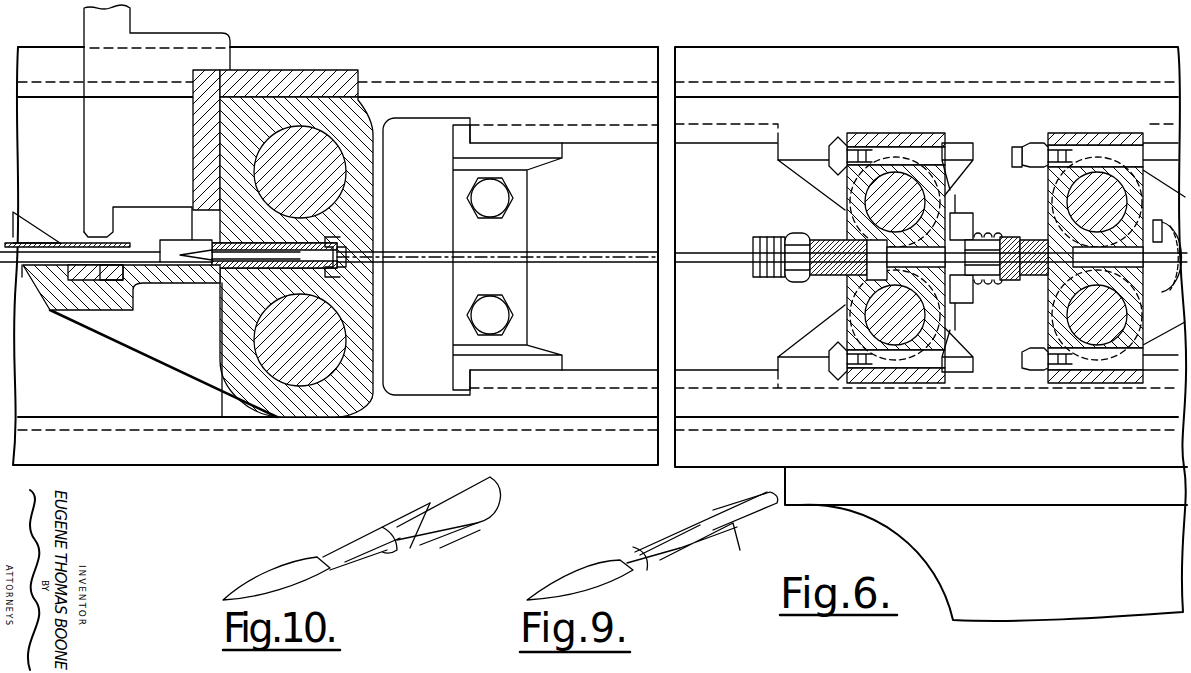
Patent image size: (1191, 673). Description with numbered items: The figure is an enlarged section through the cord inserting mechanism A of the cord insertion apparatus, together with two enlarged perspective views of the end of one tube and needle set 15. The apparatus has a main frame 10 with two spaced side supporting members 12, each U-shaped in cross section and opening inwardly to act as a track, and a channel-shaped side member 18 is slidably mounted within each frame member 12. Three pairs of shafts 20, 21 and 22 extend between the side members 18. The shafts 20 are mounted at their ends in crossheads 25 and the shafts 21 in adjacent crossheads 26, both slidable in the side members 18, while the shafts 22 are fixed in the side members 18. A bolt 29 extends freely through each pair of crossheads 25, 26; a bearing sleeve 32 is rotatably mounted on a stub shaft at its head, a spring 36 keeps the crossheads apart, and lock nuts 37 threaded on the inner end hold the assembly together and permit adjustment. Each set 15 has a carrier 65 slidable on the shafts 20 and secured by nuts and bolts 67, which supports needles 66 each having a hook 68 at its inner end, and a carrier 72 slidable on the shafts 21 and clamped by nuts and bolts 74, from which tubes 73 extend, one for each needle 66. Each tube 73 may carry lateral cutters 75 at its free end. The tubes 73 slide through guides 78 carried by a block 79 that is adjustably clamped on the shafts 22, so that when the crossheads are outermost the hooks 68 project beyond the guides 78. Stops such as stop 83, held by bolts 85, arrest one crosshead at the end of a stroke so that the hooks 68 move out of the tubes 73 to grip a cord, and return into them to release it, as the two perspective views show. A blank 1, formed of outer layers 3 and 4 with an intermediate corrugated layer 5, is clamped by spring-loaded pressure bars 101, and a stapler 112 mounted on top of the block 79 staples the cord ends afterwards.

In FIG. 6, the blank 1 is at (112, 258).
In FIG. 6, the outer layer 3 is at (60, 243).
In FIG. 6, the outer layer 4 is at (22, 277).
In FIG. 6, the intermediate corrugated layer 5 is at (60, 250).
In FIG. 6, the spring-loaded pressure bar 101 is at (30, 233).
In FIG. 6, the stapler 112 is at (173, 43).
In FIG. 6, the side supporting member 12 is at (548, 53).
In FIG. 6, the cord inserting mechanism A is at (612, 160).
In FIG. 6, the tube and needle set 15 is at (580, 248).
In FIG. 6, the shaft 22 is at (315, 137).
In FIG. 6, the block 79 is at (360, 108).
In FIG. 6, the guide 78 is at (337, 240).
In FIG. 6, the hook 68 is at (210, 250).
In FIG. 10, the hook 68 is at (317, 560).
In FIG. 9, the hook 68 is at (620, 560).
In FIG. 6, the lateral cutter 75 is at (240, 265).
In FIG. 10, the lateral cutter 75 is at (467, 525).
In FIG. 9, the lateral cutter 75 is at (705, 557).
In FIG. 6, the stop 83 is at (510, 224).
In FIG. 6, the bolt 85 is at (498, 198).
In FIG. 6, the main frame 10 is at (770, 52).
In FIG. 6, the channel-shaped side member 18 is at (697, 110).
In FIG. 6, the shaft 20 is at (1093, 187).
In FIG. 6, the shaft 21 is at (886, 180).
In FIG. 6, the crosshead 25 is at (1020, 170).
In FIG. 6, the crosshead 26 is at (957, 147).
In FIG. 6, the bolt 29 is at (753, 273).
In FIG. 6, the bearing sleeve 32 is at (1177, 295).
In FIG. 6, the spring 36 is at (980, 287).
In FIG. 6, the lock nut 37 is at (795, 282).
In FIG. 6, the carrier 65 is at (1125, 170).
In FIG. 6, the needle 66 is at (960, 213).
In FIG. 10, the needle 66 is at (382, 532).
In FIG. 9, the needle 66 is at (650, 532).
In FIG. 6, the nuts and bolts 67 is at (1045, 167).
In FIG. 6, the carrier 72 is at (842, 210).
In FIG. 6, the tube 73 is at (722, 222).
In FIG. 10, the tube 73 is at (495, 492).
In FIG. 9, the tube 73 is at (760, 520).
In FIG. 6, the clamping nuts and bolts 74 is at (833, 157).